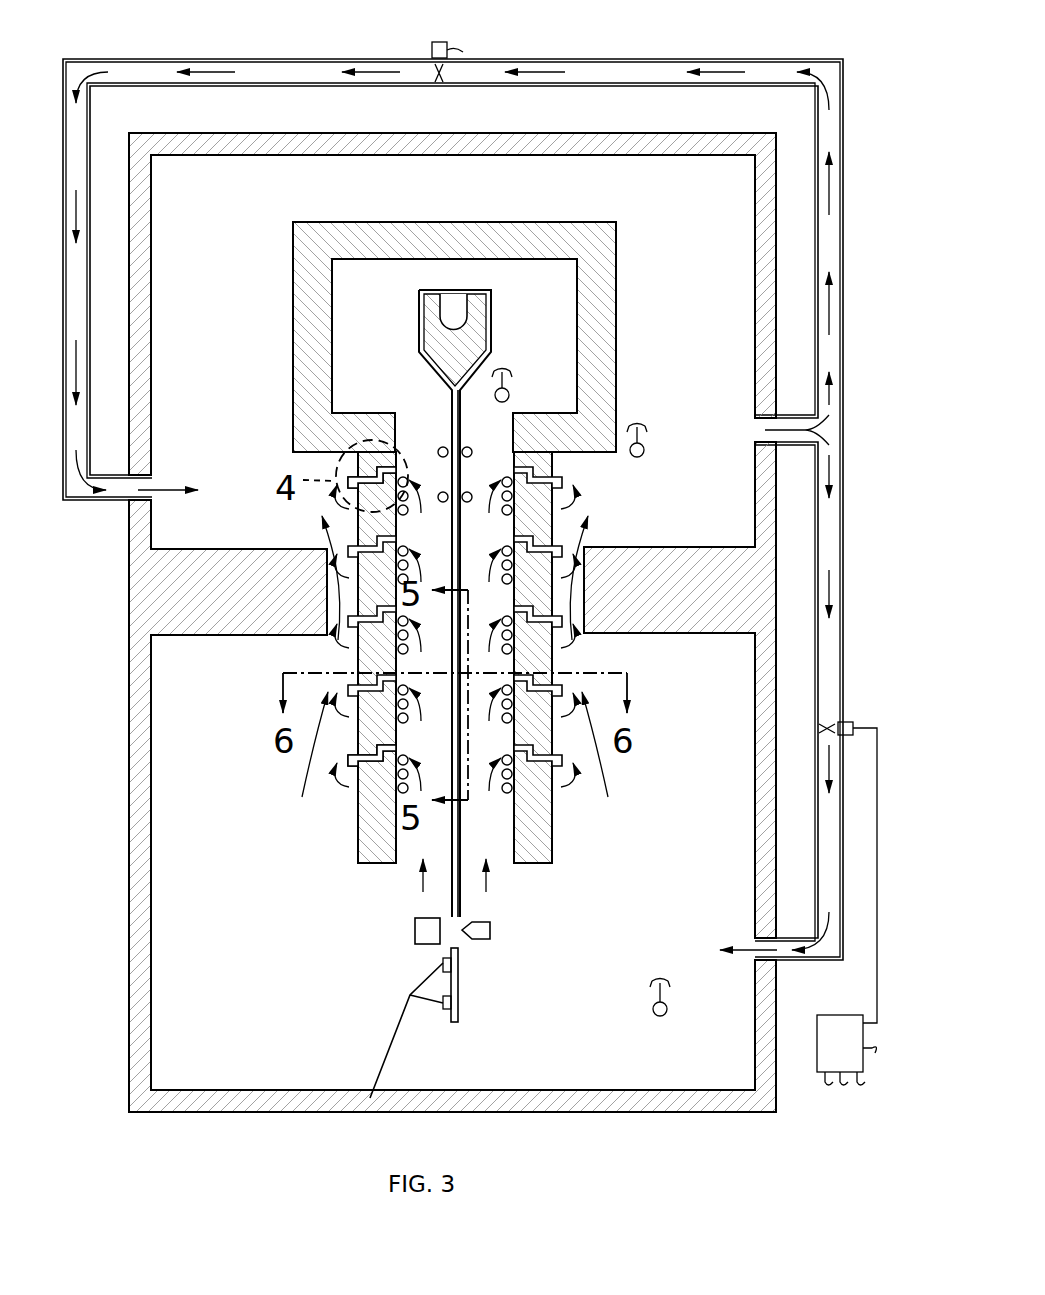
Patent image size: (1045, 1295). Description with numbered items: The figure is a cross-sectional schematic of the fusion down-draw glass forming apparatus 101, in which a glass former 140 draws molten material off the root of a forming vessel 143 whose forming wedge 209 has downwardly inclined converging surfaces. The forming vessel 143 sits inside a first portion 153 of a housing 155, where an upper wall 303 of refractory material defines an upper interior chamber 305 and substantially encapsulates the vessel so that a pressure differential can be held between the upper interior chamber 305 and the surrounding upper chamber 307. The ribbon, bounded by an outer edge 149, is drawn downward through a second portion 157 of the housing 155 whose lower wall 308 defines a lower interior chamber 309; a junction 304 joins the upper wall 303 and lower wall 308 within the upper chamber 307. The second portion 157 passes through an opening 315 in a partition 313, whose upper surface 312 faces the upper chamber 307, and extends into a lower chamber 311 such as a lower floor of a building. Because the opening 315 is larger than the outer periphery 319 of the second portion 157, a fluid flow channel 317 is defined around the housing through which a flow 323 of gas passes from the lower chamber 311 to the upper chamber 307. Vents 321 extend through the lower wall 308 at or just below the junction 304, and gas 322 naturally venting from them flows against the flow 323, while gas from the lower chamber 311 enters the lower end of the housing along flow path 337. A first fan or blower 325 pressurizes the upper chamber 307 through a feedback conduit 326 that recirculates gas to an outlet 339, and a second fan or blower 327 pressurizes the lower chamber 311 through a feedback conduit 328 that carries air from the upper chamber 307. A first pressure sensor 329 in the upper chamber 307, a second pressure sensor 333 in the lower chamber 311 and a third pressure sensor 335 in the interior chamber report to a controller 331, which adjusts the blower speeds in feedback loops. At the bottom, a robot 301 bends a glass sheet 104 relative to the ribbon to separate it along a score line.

The glass forming apparatus 101 is at (799, 57).
The glass sheet 104 is at (462, 982).
The glass former 140 is at (497, 276).
The forming vessel 143 is at (499, 320).
The outer edge of the glass ribbon 149 is at (507, 930).
The first portion of the housing 153 is at (616, 264).
The housing 155 is at (490, 182).
The second portion of the housing 157 is at (552, 830).
The forming wedge 209 is at (481, 347).
The robot 301 is at (402, 1013).
The upper wall 303 is at (616, 312).
The junction 304 is at (558, 455).
The upper interior chamber 305 is at (338, 303).
The upper chamber 307 is at (738, 483).
The lower wall 308 is at (358, 858).
The lower interior chamber 309 is at (446, 746).
The lower chamber 311 is at (160, 858).
The upper surface of the partition 312 is at (180, 549).
The partition 313 is at (188, 632).
The opening 315 is at (338, 640).
The fluid flow channel 317 is at (332, 565).
The outer periphery of the second portion 319 is at (570, 605).
The vents 321 is at (372, 453).
The gas naturally venting through the vents 322 is at (356, 800).
The flow of gas 323 is at (310, 768).
The first fan or blower 325 is at (423, 50).
The feedback conduit 326 is at (530, 58).
The second fan or blower 327 is at (860, 714).
The feedback conduit 328 is at (843, 551).
The first pressure sensor 329 is at (645, 449).
The controller 331 is at (815, 1060).
The second pressure sensor 333 is at (667, 1008).
The third pressure sensor 335 is at (509, 395).
The flow path 337 is at (423, 885).
The outlet 339 is at (148, 482).